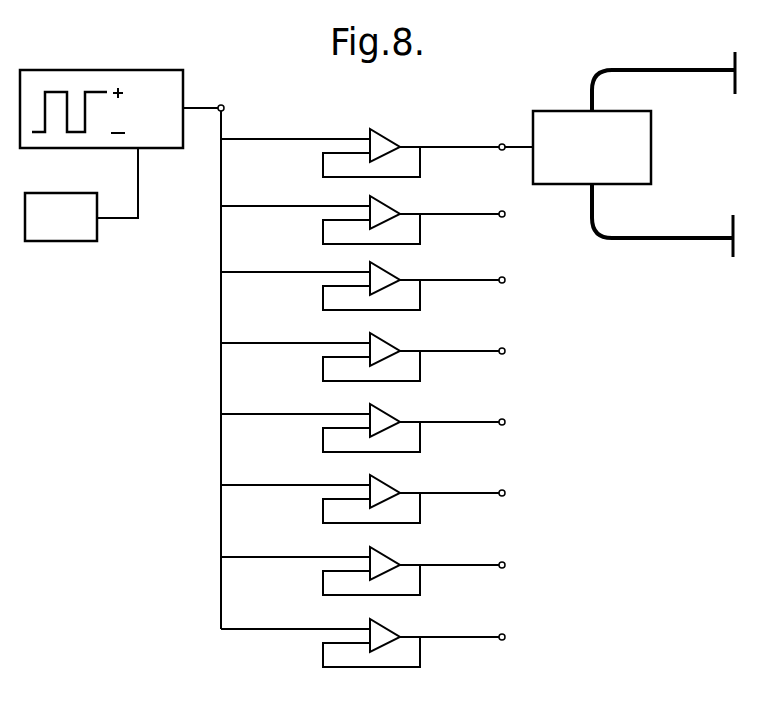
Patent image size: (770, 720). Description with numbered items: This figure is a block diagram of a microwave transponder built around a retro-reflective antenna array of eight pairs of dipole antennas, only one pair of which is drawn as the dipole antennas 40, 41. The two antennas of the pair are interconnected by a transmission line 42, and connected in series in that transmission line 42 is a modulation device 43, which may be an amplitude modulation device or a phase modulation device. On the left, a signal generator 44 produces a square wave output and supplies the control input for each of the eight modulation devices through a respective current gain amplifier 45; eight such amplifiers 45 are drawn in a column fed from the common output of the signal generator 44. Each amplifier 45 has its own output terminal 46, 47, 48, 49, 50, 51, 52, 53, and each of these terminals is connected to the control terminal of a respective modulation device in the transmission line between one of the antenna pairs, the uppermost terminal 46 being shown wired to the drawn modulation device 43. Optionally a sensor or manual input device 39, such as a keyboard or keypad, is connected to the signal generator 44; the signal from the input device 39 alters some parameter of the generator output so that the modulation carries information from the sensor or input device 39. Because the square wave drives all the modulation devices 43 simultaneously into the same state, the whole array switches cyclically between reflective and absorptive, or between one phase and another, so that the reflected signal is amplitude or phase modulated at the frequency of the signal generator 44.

The sensor or manual input device 39 is at (61, 243).
The dipole antenna 40 is at (722, 56).
The dipole antenna 41 is at (720, 223).
The transmission line 42 is at (662, 68).
The modulation device 43 is at (553, 110).
The signal generator 44 is at (151, 81).
The current gain amplifier 45 is at (384, 629).
The output terminal 46 is at (502, 142).
The output terminal 47 is at (502, 209).
The output terminal 48 is at (502, 275).
The output terminal 49 is at (502, 346).
The output terminal 50 is at (502, 417).
The output terminal 51 is at (502, 488).
The output terminal 52 is at (502, 560).
The output terminal 53 is at (502, 632).